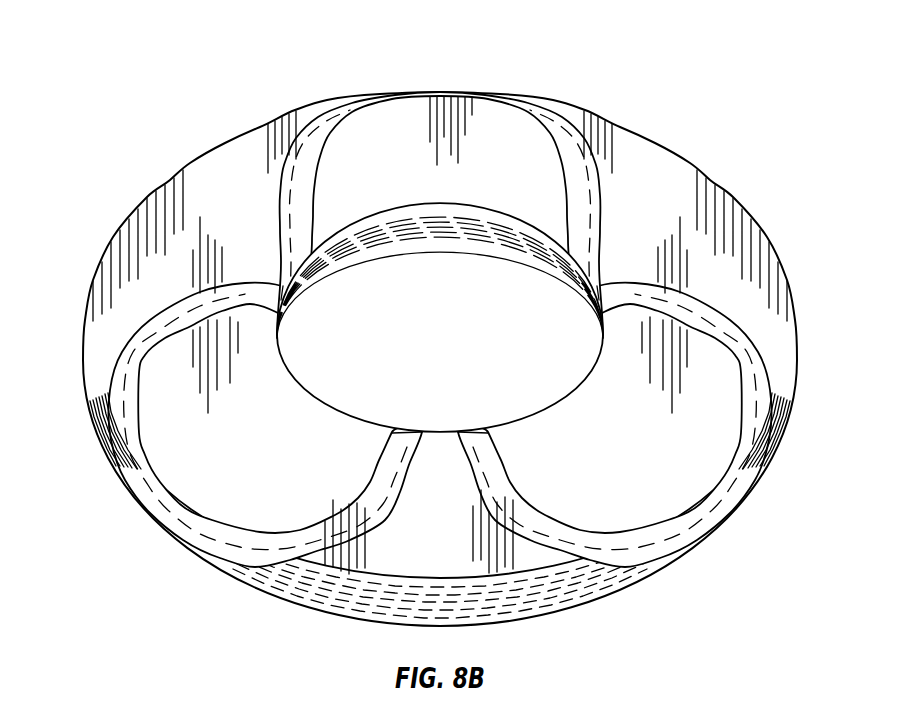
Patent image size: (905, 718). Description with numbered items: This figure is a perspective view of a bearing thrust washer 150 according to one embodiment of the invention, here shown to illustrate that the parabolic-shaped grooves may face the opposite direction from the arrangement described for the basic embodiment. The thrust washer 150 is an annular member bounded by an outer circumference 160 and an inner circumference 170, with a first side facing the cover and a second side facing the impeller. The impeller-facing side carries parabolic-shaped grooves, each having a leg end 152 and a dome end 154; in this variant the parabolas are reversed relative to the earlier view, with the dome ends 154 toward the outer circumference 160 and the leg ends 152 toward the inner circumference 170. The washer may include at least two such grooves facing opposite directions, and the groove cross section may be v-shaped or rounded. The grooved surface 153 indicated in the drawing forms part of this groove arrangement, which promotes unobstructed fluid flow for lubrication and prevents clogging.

The bearing thrust washer 150 is at (441, 326).
The leg end 152 is at (310, 247).
The arcuate ring member 153 is at (307, 160).
The dome end 154 is at (365, 100).
The outer circumference 160 is at (745, 210).
The inner circumference 170 is at (500, 234).